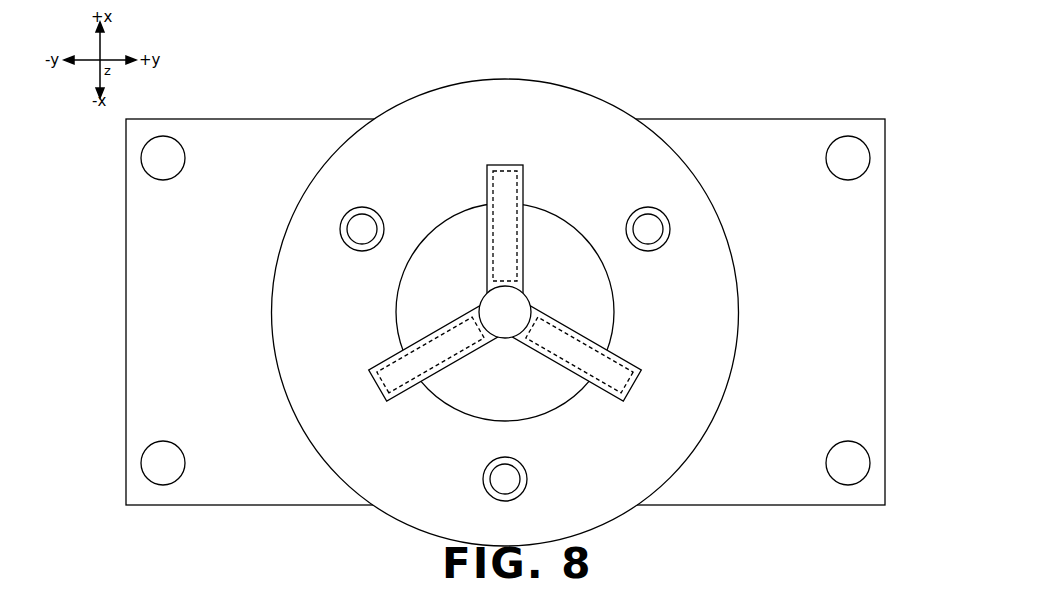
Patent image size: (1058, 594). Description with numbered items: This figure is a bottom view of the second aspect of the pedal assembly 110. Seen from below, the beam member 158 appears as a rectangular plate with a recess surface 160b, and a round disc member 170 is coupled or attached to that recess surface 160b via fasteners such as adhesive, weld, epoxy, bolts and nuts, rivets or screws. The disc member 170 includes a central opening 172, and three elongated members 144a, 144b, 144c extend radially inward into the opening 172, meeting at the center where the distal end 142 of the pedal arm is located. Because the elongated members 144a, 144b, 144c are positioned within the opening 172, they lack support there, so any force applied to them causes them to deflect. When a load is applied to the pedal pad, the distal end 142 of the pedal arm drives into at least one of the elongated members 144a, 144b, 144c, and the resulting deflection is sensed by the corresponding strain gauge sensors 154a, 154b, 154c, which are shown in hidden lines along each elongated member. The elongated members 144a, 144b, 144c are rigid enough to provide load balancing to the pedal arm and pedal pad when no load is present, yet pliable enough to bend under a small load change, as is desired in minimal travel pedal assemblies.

The pedal assembly 110 is at (819, 90).
The beam member 158 is at (506, 300).
The disc member 170 is at (707, 152).
The opening 172 is at (570, 232).
The distal end 142 is at (488, 298).
The elongated member 144a is at (486, 217).
The elongated member 144b is at (591, 376).
The elongated member 144c is at (403, 378).
The strain gauge sensor 154a is at (490, 228).
The strain gauge sensor 154b is at (590, 344).
The strain gauge sensor 154c is at (442, 362).
The recess surface 160b is at (826, 322).